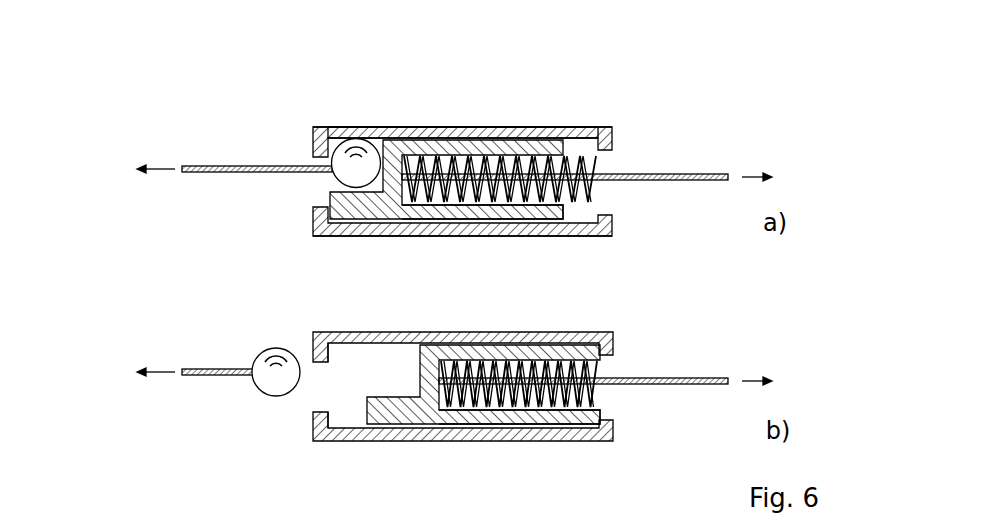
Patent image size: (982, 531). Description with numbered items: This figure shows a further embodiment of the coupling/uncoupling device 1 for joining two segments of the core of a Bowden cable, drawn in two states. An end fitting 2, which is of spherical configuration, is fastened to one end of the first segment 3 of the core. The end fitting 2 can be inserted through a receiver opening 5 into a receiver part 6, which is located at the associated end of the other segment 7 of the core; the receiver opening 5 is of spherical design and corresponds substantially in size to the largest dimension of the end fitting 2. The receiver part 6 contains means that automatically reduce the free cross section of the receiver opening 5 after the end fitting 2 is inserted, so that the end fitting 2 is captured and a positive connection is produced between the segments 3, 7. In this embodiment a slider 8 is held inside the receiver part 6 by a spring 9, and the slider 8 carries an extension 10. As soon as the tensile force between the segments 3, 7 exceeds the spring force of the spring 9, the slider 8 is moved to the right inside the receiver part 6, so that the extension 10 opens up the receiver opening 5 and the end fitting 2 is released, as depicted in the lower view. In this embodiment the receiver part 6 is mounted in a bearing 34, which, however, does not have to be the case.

The coupling/uncoupling device 1 is at (462, 118).
The end fitting 2 is at (357, 155).
The segment 3 is at (226, 166).
The receiver opening 5 is at (325, 393).
The receiver part 6 is at (372, 112).
The segment 7 is at (660, 175).
The slider 8 is at (500, 208).
The spring 9 is at (528, 160).
The extension 10 is at (370, 213).
The bearing 34 is at (462, 127).